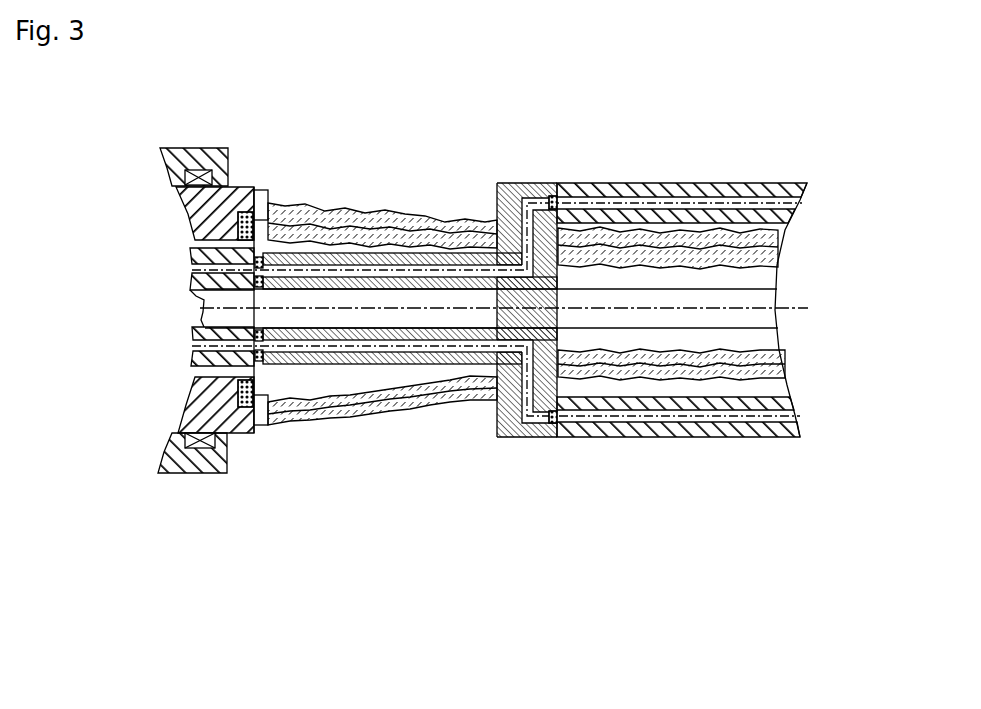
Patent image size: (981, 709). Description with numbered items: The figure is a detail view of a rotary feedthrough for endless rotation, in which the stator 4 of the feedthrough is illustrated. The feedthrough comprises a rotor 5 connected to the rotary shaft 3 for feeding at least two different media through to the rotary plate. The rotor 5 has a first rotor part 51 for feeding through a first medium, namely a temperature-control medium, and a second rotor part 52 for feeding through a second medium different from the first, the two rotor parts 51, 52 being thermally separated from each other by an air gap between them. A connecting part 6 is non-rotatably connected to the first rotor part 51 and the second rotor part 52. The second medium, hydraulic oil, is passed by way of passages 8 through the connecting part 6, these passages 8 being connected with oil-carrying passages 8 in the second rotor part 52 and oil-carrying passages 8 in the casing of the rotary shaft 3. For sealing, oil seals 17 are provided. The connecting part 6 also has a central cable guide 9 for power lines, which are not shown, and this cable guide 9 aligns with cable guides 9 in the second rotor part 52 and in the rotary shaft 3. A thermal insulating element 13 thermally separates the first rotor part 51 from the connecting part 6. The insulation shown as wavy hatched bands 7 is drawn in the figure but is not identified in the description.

The rotary shaft 3 is at (727, 185).
The stator 4 is at (218, 148).
The rotor 5 is at (150, 522).
The connecting part 6 is at (302, 378).
The insulation 7 is at (430, 228).
The passages 8 is at (528, 207).
The cable guide 9 is at (743, 322).
The thermal insulating element 13 is at (244, 433).
The oil seals 17 is at (588, 458).
The first rotor part 51 is at (246, 192).
The second rotor part 52 is at (192, 263).